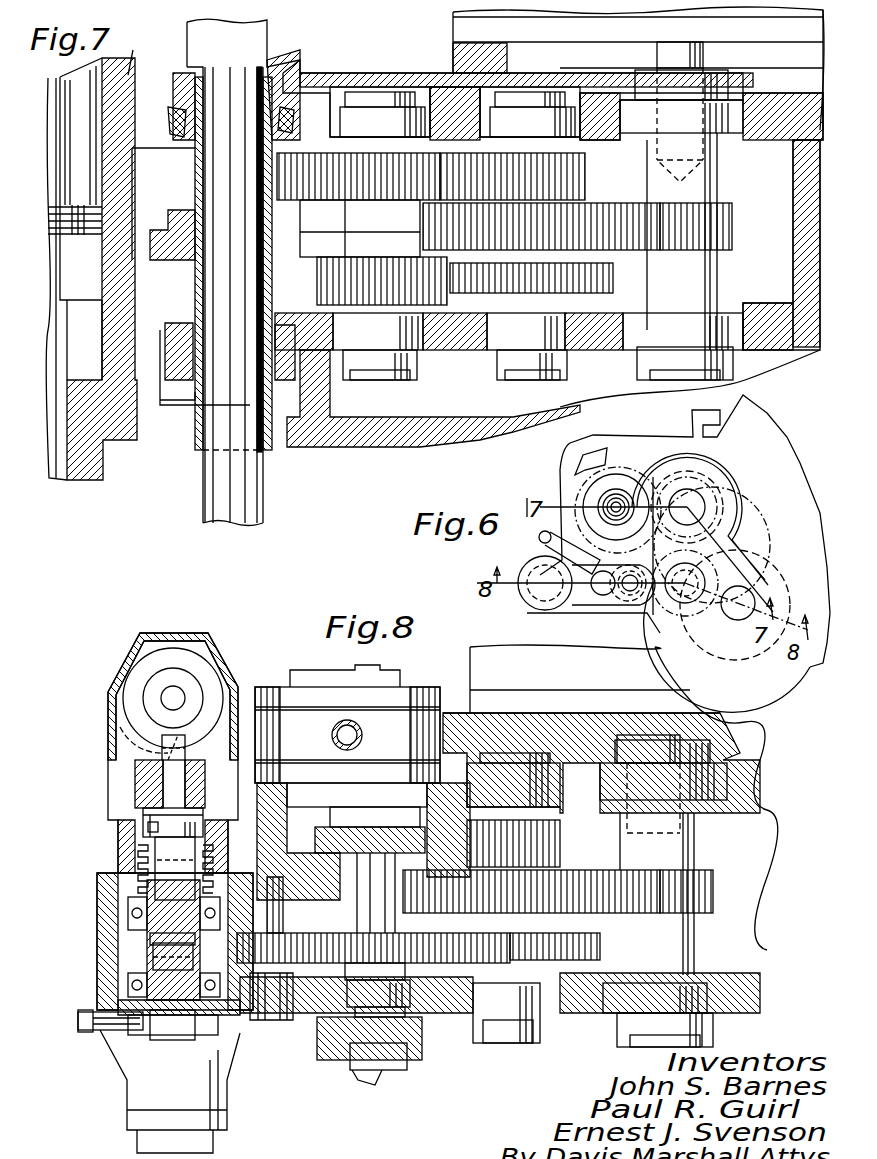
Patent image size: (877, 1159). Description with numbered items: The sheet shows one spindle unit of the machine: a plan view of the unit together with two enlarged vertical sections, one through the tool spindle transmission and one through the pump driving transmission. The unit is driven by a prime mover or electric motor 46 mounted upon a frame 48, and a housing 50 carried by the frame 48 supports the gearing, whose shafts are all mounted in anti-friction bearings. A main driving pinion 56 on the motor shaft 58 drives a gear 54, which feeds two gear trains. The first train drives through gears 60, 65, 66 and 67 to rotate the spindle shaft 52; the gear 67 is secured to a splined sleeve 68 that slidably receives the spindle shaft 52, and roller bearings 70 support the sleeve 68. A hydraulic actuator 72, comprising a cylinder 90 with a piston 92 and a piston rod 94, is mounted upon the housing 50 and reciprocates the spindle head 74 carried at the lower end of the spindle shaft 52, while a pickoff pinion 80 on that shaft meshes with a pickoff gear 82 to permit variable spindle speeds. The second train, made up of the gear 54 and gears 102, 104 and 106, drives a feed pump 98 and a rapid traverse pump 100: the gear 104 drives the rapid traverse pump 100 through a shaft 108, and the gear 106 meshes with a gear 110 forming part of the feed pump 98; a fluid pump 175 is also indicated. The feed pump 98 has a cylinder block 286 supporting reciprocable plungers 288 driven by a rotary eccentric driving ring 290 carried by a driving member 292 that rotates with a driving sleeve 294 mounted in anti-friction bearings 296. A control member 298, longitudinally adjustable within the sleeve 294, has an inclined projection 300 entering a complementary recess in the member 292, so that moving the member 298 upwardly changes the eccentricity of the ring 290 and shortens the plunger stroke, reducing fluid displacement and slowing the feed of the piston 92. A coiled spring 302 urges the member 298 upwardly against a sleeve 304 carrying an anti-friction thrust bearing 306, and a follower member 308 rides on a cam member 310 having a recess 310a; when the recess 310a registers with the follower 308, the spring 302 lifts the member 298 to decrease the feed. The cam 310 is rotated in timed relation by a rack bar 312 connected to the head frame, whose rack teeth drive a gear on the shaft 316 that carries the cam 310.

In FIG. 7, the electric motor 46 is at (453, 28).
In FIG. 6, the electric motor 46 is at (790, 672).
In FIG. 8, the electric motor 46 is at (470, 660).
In FIG. 7, the frame 48 is at (382, 442).
In FIG. 7, the housing 50 is at (463, 345).
In FIG. 8, the housing 50 is at (590, 1018).
In FIG. 7, the spindle shaft 52 is at (252, 488).
In FIG. 7, the gear 54 is at (605, 204).
In FIG. 6, the gear 54 is at (692, 640).
In FIG. 8, the gear 54 is at (588, 876).
In FIG. 7, the main driving pinion 56 is at (733, 207).
In FIG. 6, the main driving pinion 56 is at (734, 622).
In FIG. 8, the main driving pinion 56 is at (714, 885).
In FIG. 7, the motor shaft 58 is at (703, 53).
In FIG. 8, the motor shaft 58 is at (690, 722).
In FIG. 7, the gear 60 is at (585, 160).
In FIG. 6, the gear 60 is at (690, 612).
In FIG. 8, the gear 60 is at (562, 830).
In FIG. 7, the gear 65 is at (338, 188).
In FIG. 6, the gear 65 is at (722, 500).
In FIG. 7, the gear 66 is at (355, 262).
In FIG. 6, the gear 66 is at (767, 525).
In FIG. 7, the gear 67 is at (150, 258).
In FIG. 6, the gear 67 is at (700, 505).
In FIG. 7, the splined sleeve 68 is at (193, 165).
In FIG. 7, the roller bearings 70 is at (292, 100).
In FIG. 7, the hydraulic actuator 72 is at (140, 52).
In FIG. 6, the hydraulic actuator 72 is at (601, 470).
In FIG. 6, the spindle head 74 is at (560, 463).
In FIG. 6, the pinion 80 is at (706, 480).
In FIG. 6, the gear 82 is at (648, 470).
In FIG. 7, the cylinder 90 is at (112, 430).
In FIG. 7, the piston 92 is at (88, 213).
In FIG. 7, the piston rod 94 is at (75, 368).
In FIG. 6, the feed pump 98 is at (520, 600).
In FIG. 8, the feed pump 98 is at (122, 1080).
In FIG. 6, the rapid traverse pump 100 is at (598, 612).
In FIG. 8, the rapid traverse pump 100 is at (283, 683).
In FIG. 7, the gear 102 is at (613, 276).
In FIG. 6, the gear 102 is at (645, 615).
In FIG. 8, the gear 102 is at (600, 943).
In FIG. 6, the gear 104 is at (627, 600).
In FIG. 8, the gear 104 is at (365, 940).
In FIG. 6, the gear 106 is at (597, 600).
In FIG. 8, the gear 106 is at (295, 1022).
In FIG. 8, the shaft 108 is at (356, 883).
In FIG. 6, the gear 110 is at (540, 606).
In FIG. 8, the gear 110 is at (120, 957).
In FIG. 8, the fluid pump 175 is at (405, 1075).
In FIG. 8, the cylinder block 286 is at (113, 1035).
In FIG. 8, the plungers 288 is at (118, 1008).
In FIG. 8, the eccentric driving ring 290 is at (170, 1037).
In FIG. 8, the driving member 292 is at (170, 985).
In FIG. 8, the driving sleeve 294 is at (150, 939).
In FIG. 8, the anti-friction bearings 296 is at (130, 900).
In FIG. 8, the control member 298 is at (165, 870).
In FIG. 8, the inclined projection 300 is at (128, 915).
In FIG. 8, the coiled spring 302 is at (145, 855).
In FIG. 8, the sleeve 304 is at (145, 812).
In FIG. 8, the anti-friction thrust bearing 306 is at (148, 828).
In FIG. 8, the follower member 308 is at (160, 752).
In FIG. 8, the cam member 310 is at (127, 687).
In FIG. 8, the recess 310a is at (118, 728).
In FIG. 6, the rack bar 312 is at (538, 538).
In FIG. 8, the shaft 316 is at (165, 692).